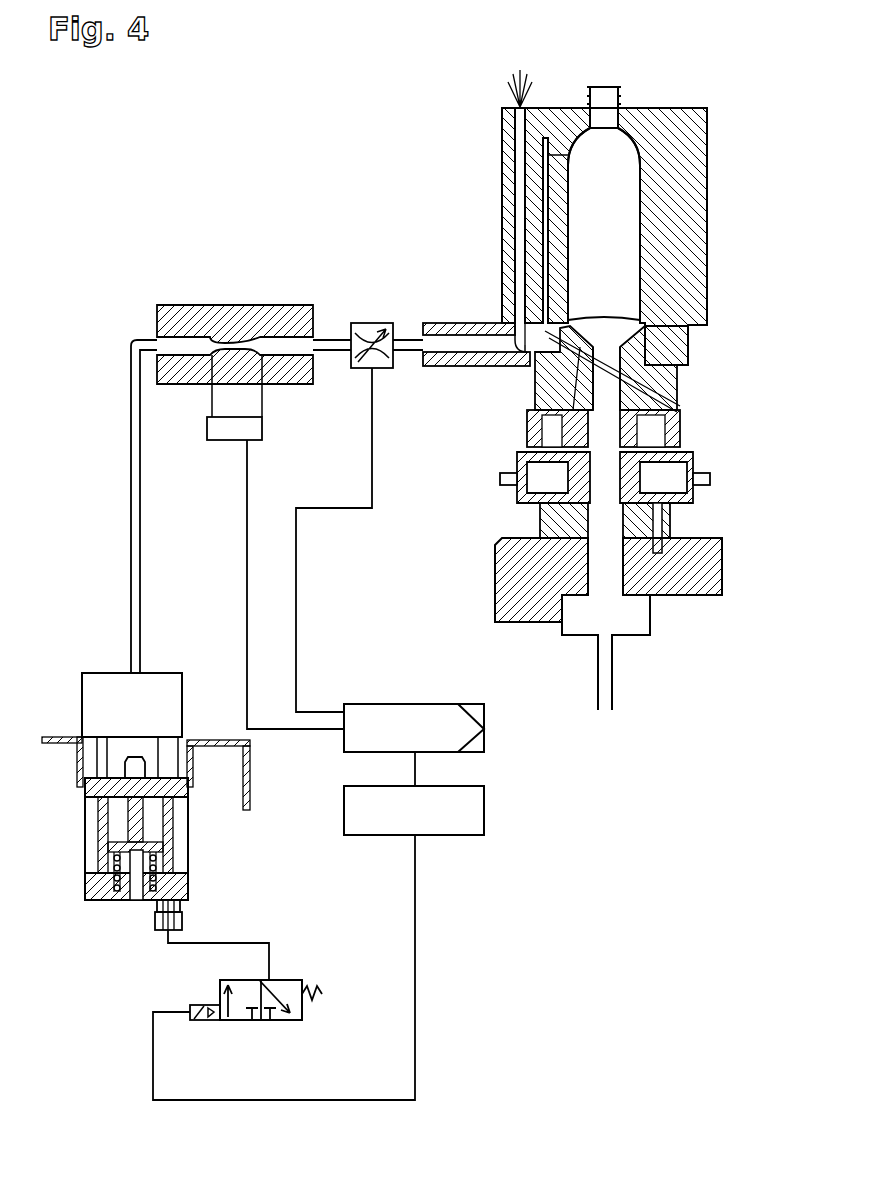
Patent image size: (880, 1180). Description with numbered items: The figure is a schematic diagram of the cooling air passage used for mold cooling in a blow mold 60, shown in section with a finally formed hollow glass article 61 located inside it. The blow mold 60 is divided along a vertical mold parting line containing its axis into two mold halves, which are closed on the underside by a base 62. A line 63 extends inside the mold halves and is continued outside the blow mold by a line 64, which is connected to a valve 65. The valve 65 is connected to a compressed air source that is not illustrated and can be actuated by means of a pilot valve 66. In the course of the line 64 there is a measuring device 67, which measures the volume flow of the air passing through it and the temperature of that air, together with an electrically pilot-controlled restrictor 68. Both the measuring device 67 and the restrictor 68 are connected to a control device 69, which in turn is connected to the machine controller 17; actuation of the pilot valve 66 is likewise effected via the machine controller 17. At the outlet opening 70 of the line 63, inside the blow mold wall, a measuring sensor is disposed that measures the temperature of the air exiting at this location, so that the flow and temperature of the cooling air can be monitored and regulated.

The machine controller 17 is at (484, 808).
The blow mold 60 is at (690, 200).
The hollow glass article 61 is at (598, 105).
The base 62 is at (655, 347).
The line 63 is at (520, 183).
The line 64 is at (412, 345).
The valve 65 is at (98, 900).
The pilot valve 66 is at (296, 1002).
The measuring device 67 is at (233, 320).
The restrictor 68 is at (368, 330).
The control device 69 is at (484, 742).
The outlet opening 70 is at (527, 108).